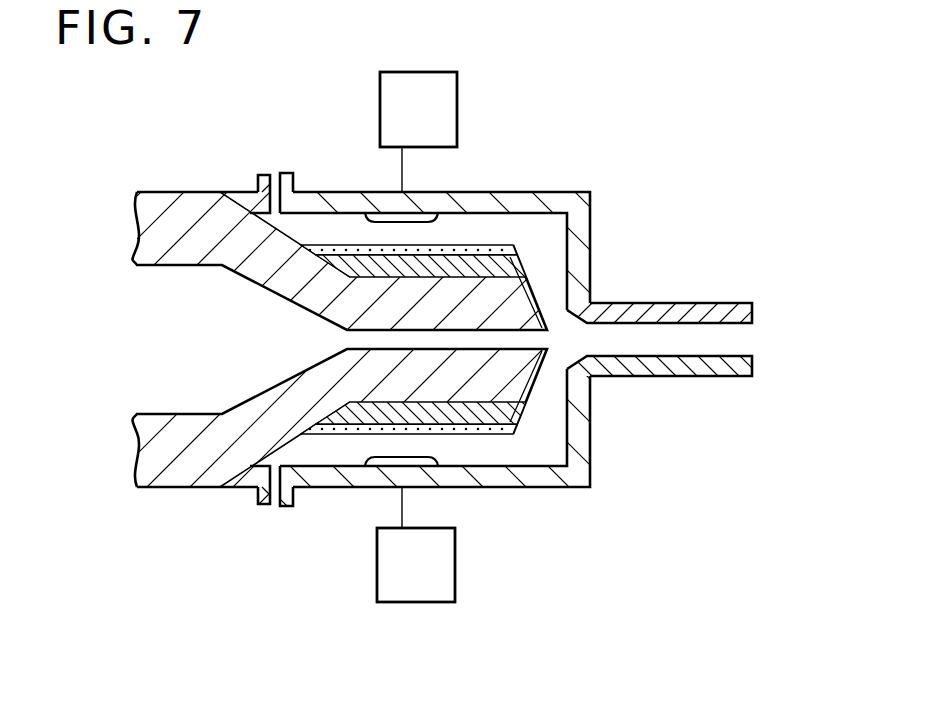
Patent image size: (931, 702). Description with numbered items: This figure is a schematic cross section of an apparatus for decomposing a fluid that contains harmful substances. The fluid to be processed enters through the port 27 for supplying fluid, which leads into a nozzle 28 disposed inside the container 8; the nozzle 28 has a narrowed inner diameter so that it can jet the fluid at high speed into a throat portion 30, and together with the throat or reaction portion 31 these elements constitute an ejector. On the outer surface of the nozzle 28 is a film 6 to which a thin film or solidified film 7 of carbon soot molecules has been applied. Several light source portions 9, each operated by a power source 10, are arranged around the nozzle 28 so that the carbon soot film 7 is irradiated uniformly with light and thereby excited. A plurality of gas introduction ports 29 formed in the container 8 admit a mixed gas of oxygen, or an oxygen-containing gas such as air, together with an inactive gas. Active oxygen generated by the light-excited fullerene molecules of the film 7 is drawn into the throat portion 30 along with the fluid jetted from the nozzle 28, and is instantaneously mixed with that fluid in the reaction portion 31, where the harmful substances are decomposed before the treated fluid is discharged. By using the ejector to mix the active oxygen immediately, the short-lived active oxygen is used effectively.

The film 6 is at (503, 262).
The thin film or solidified film of carbon soot molecules 7 is at (502, 262).
The container 8 is at (578, 253).
The light source portion 9 is at (417, 219).
The power source 10 is at (440, 102).
The port for supplying fluid to be processed 27 is at (172, 368).
The nozzle 28 is at (508, 340).
The gas introduction port 29 is at (287, 173).
The throat portion 30 is at (752, 310).
The throat (reaction portion) 31 is at (743, 340).